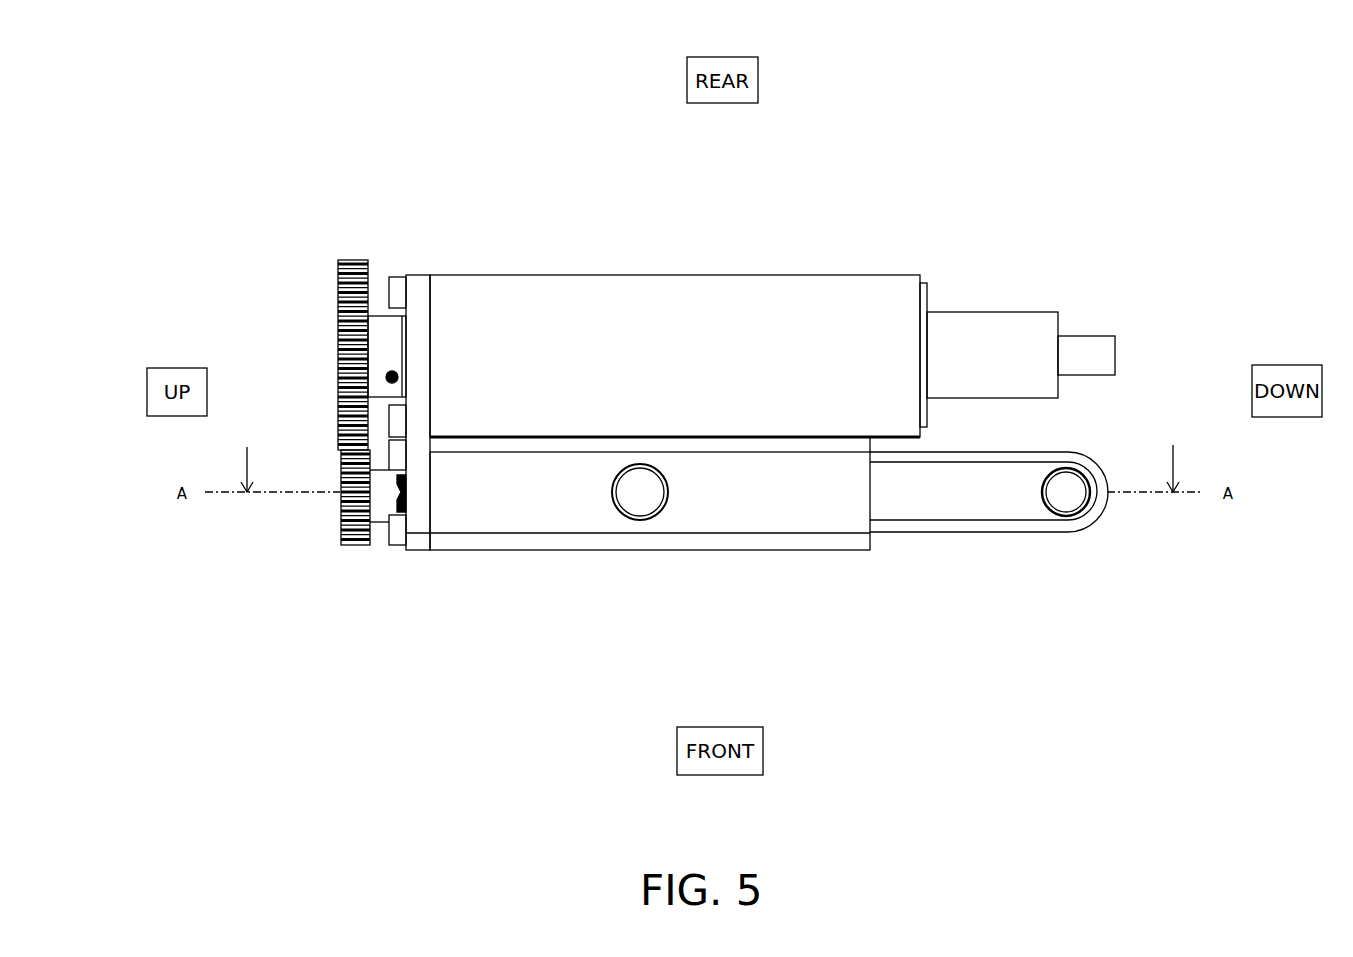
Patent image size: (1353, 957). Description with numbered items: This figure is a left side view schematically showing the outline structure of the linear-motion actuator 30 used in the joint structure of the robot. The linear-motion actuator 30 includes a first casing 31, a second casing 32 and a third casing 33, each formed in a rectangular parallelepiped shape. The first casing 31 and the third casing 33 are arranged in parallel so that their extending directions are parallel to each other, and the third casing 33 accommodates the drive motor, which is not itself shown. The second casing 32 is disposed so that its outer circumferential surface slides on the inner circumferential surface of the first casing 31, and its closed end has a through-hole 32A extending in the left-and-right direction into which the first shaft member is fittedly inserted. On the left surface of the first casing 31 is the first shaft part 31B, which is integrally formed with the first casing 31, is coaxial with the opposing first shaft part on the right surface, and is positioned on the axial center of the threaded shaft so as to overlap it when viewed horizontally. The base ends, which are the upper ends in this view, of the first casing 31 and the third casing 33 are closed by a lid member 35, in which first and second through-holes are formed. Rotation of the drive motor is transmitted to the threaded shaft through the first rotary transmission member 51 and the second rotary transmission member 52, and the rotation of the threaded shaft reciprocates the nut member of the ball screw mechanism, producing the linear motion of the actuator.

The linear-motion actuator 30 is at (717, 35).
The first casing 31 is at (500, 515).
The first shaft part 31B is at (640, 492).
The second casing 32 is at (945, 525).
The through-hole 32A is at (1065, 492).
The third casing 33 is at (655, 305).
The lid member 35 is at (415, 308).
The first rotary transmission member 51 is at (340, 329).
The second rotary transmission member 52 is at (340, 522).